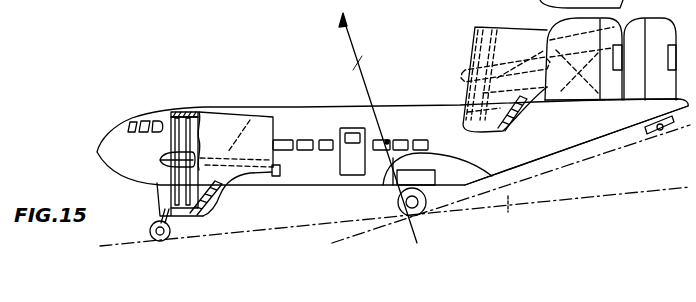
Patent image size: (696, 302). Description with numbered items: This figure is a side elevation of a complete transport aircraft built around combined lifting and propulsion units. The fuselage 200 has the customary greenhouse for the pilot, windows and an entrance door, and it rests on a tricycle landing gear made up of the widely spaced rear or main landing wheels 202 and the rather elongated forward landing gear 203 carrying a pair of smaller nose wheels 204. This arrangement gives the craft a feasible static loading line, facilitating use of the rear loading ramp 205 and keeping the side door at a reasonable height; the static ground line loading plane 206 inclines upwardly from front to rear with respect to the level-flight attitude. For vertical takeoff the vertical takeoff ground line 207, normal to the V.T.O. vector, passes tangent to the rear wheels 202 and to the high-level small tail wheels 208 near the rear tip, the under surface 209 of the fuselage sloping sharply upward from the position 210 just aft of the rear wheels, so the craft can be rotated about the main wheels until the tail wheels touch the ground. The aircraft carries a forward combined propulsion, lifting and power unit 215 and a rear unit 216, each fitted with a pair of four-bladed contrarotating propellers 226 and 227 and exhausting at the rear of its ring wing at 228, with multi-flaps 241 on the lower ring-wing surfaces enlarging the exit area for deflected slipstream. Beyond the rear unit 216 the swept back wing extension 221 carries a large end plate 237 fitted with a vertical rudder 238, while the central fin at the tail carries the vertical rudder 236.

The fuselage 200 is at (277, 102).
The rear or main landing wheels 202 is at (398, 203).
The forward landing gear 203 is at (163, 194).
The nose wheels 204 is at (150, 232).
The rear loading ramp 205 is at (509, 214).
The static ground line loading plane 206 is at (665, 186).
The vertical takeoff ground line 207 is at (556, 173).
The tail wheels 208 is at (661, 134).
The under surface of the fuselage 209 is at (556, 152).
The position aft of the rear wheels 210 is at (465, 172).
The forward combined propulsion, lifting and power unit 215 is at (267, 131).
The rear combined propulsion, lifting and power unit 216 is at (466, 43).
The swept back wing extension 221 is at (519, 64).
The propeller 226 is at (170, 127).
The propeller 227 is at (201, 105).
The engine exhaust 228 is at (281, 172).
The vertical rudder 236 is at (653, 30).
The end plate 237 is at (575, 30).
The vertical rudder 238 is at (615, 88).
The multi-flaps 241 is at (204, 210).